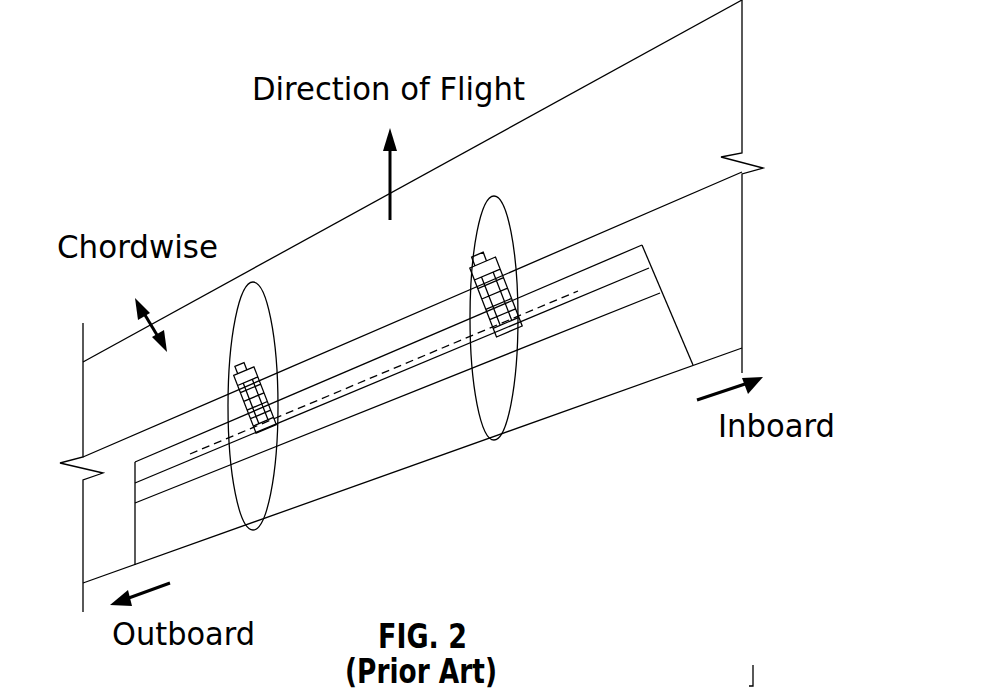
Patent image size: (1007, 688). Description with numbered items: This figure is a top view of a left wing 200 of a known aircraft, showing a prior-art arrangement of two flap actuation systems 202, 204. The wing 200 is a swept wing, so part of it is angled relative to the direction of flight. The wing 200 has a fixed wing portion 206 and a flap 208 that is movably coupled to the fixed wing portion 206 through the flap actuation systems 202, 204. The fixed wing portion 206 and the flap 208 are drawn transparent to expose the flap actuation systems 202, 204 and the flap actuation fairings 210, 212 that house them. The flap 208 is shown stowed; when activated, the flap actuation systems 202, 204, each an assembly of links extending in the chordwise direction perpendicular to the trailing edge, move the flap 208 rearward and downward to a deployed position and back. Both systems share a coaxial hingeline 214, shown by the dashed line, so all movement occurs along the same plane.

The left wing 200 is at (623, 78).
The flap actuation system 202 is at (470, 262).
The flap actuation system 204 is at (238, 385).
The fixed wing portion 206 is at (310, 250).
The flap 208 is at (367, 470).
The flap actuation fairing 210 is at (500, 200).
The flap actuation fairing 212 is at (275, 318).
The coaxial hingeline 214 is at (566, 298).